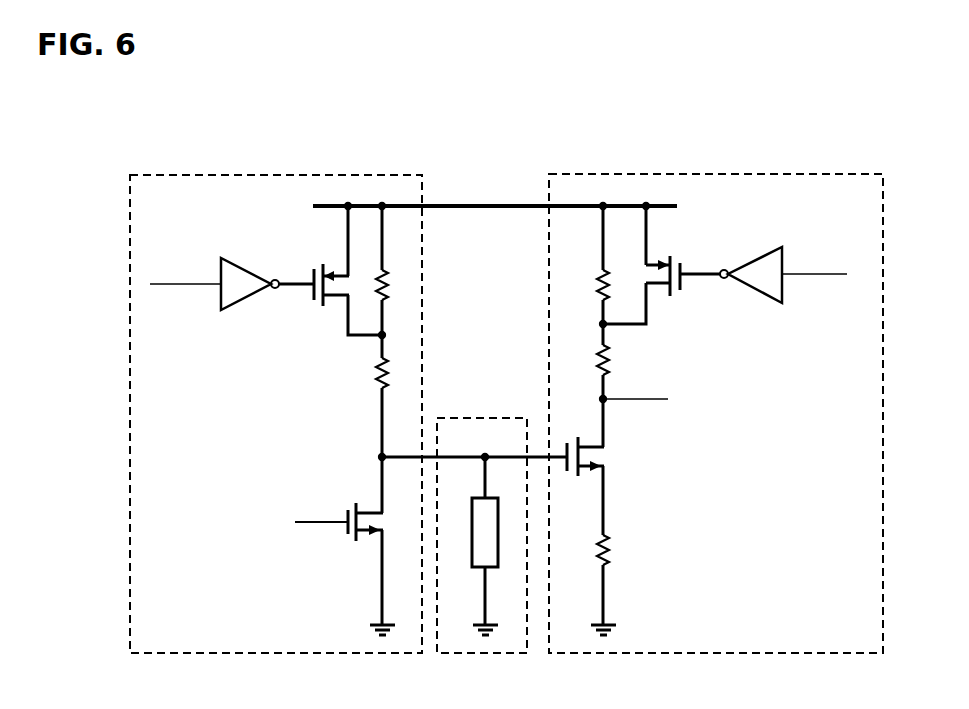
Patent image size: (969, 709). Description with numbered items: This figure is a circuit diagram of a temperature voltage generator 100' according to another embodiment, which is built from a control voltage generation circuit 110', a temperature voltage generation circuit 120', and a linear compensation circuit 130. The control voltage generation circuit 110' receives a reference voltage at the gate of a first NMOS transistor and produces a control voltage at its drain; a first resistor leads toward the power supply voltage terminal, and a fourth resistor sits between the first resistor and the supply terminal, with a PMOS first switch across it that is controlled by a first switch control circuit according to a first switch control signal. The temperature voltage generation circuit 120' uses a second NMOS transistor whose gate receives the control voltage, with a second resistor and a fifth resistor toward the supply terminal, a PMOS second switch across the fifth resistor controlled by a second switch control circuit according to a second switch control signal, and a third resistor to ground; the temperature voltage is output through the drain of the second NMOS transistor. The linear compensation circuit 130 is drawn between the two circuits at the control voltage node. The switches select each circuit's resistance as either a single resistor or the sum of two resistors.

The temperature voltage generator 100' is at (456, 416).
The control voltage generation circuit 110' is at (276, 398).
The temperature voltage generation circuit 120' is at (716, 398).
The linear compensation circuit 130 is at (478, 653).